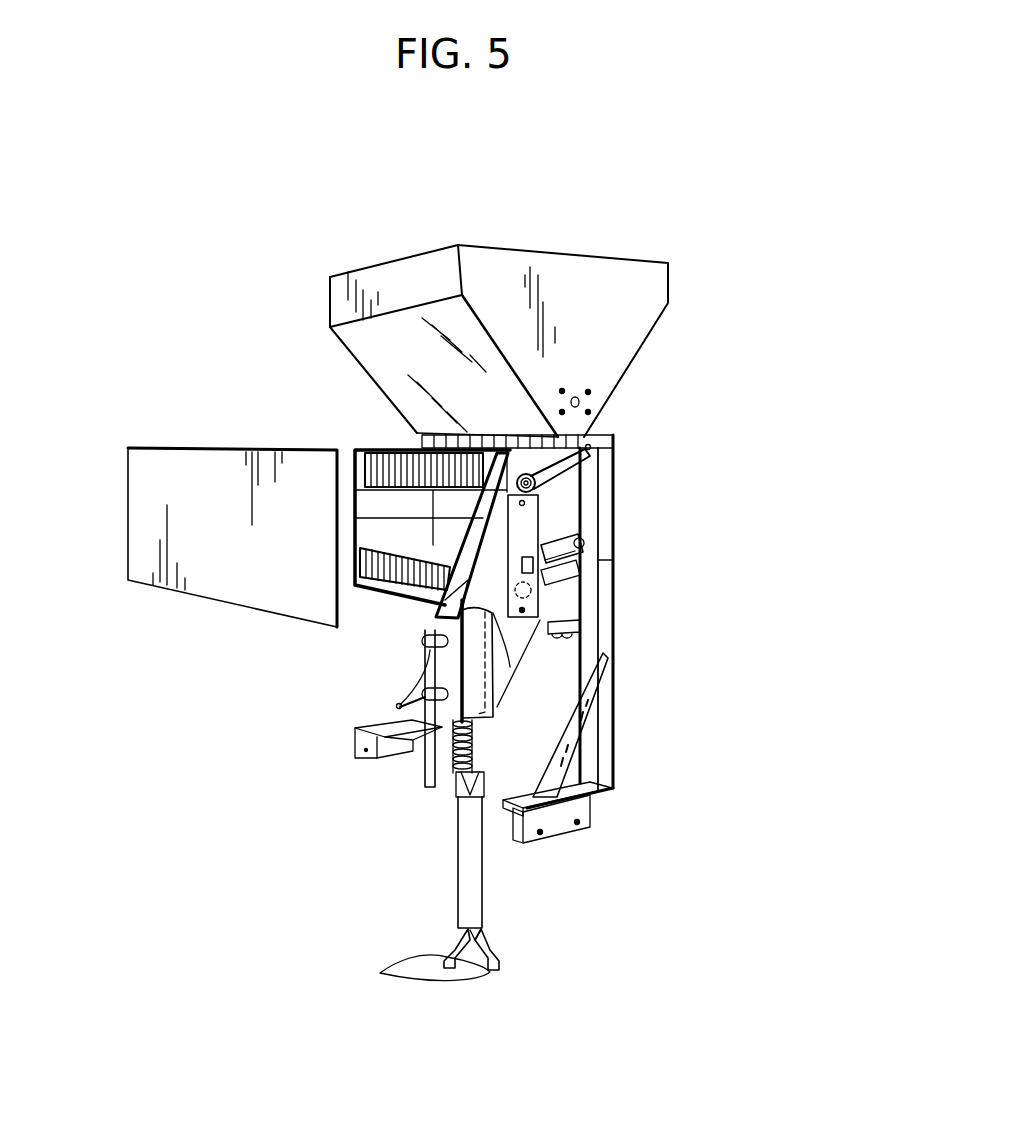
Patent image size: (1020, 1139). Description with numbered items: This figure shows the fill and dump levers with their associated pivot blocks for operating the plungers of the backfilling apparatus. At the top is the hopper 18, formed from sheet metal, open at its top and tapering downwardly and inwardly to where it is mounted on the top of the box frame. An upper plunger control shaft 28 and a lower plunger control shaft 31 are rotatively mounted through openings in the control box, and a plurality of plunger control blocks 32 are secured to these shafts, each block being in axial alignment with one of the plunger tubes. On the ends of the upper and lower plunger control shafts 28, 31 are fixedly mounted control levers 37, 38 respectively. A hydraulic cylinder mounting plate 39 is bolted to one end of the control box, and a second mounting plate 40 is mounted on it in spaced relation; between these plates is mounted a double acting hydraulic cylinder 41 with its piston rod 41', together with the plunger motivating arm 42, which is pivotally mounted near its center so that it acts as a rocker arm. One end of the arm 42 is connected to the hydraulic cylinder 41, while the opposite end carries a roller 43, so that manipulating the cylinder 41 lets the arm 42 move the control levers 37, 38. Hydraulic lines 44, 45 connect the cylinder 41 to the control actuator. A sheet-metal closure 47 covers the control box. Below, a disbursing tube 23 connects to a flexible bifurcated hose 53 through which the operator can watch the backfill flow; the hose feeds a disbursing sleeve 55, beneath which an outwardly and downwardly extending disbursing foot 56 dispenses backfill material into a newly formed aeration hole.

The hopper 18 is at (590, 293).
The control lever 37 is at (615, 470).
The plunger control block 32 is at (372, 437).
The upper plunger control shaft 28 is at (537, 485).
The roller 43 is at (540, 512).
The control lever 38 is at (584, 545).
The plunger motivating arm 42 is at (540, 590).
The lower plunger control shaft 31 is at (540, 596).
The disbursing tube 23 is at (600, 641).
The double acting hydraulic cylinder 41 is at (605, 748).
The closure 47 is at (190, 468).
The hydraulic cylinder mounting plate 39 is at (356, 518).
The piston rod 41' is at (336, 655).
The hydraulic line 44 is at (400, 703).
The hydraulic line 45 is at (425, 772).
The second mounting plate 40 is at (500, 640).
The flexible bifurcated hose 53 is at (450, 787).
The disbursing sleeve 55 is at (473, 837).
The disbursing foot 56 is at (380, 975).